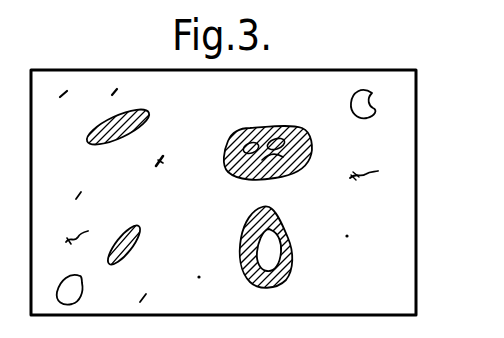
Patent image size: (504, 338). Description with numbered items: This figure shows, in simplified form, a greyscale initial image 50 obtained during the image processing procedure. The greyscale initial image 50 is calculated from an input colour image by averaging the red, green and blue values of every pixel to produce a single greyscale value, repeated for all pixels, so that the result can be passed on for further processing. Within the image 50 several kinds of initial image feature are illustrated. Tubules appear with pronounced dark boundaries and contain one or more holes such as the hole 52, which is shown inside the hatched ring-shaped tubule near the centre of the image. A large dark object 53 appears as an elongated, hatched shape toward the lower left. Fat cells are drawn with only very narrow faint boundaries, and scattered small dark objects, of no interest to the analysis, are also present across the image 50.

The greyscale initial image 50 is at (417, 189).
The hole 52 is at (265, 252).
The large dark object 53 is at (143, 233).